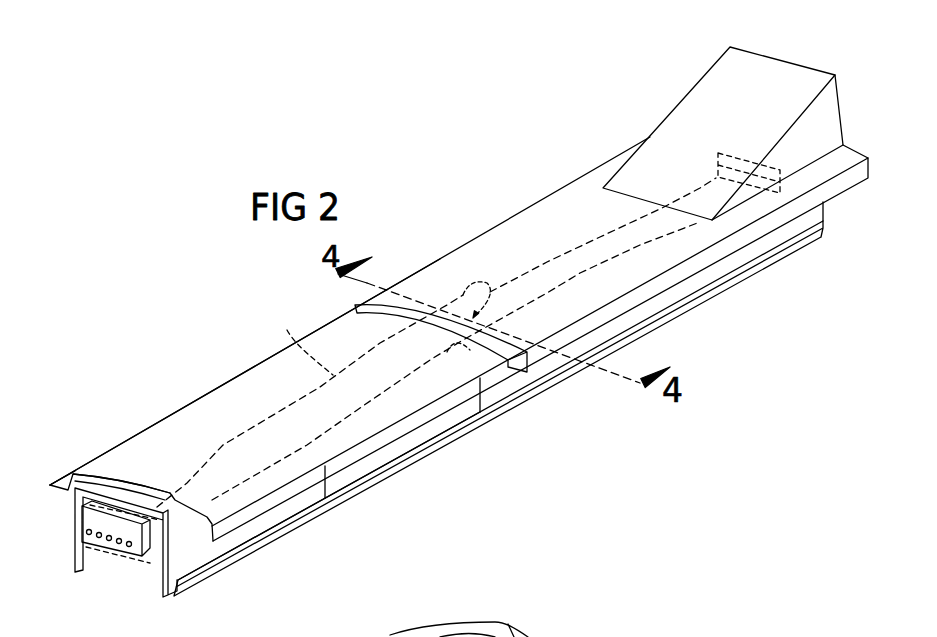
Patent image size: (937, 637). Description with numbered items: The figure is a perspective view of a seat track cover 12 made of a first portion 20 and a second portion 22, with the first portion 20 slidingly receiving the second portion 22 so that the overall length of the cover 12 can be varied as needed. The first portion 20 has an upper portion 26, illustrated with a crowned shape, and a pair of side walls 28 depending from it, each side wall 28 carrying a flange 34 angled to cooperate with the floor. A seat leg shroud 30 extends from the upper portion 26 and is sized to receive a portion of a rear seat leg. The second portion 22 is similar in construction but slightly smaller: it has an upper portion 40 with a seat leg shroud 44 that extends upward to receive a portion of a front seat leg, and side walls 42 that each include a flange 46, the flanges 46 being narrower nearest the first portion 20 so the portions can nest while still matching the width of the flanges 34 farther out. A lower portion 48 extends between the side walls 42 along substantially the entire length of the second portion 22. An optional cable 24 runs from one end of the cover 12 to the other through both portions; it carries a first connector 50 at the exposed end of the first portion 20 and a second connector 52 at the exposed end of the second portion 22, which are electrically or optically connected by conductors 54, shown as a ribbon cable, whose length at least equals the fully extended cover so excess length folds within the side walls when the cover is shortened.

The seat track cover 12 is at (393, 182).
The first portion 20 is at (513, 215).
The second portion 22 is at (229, 385).
The cable 24 is at (344, 432).
The upper portion 26 is at (452, 268).
The side walls 28 is at (502, 387).
The seat leg shroud 30 is at (711, 116).
The flange 34 is at (827, 220).
The upper portion 40 is at (172, 414).
The side walls 42 is at (217, 547).
The seat leg shroud 44 is at (140, 470).
The flange 46 is at (79, 566).
The lower portion 48 is at (143, 553).
The first connector 50 is at (786, 164).
The second connector 52 is at (82, 507).
The conductors 54 is at (287, 330).